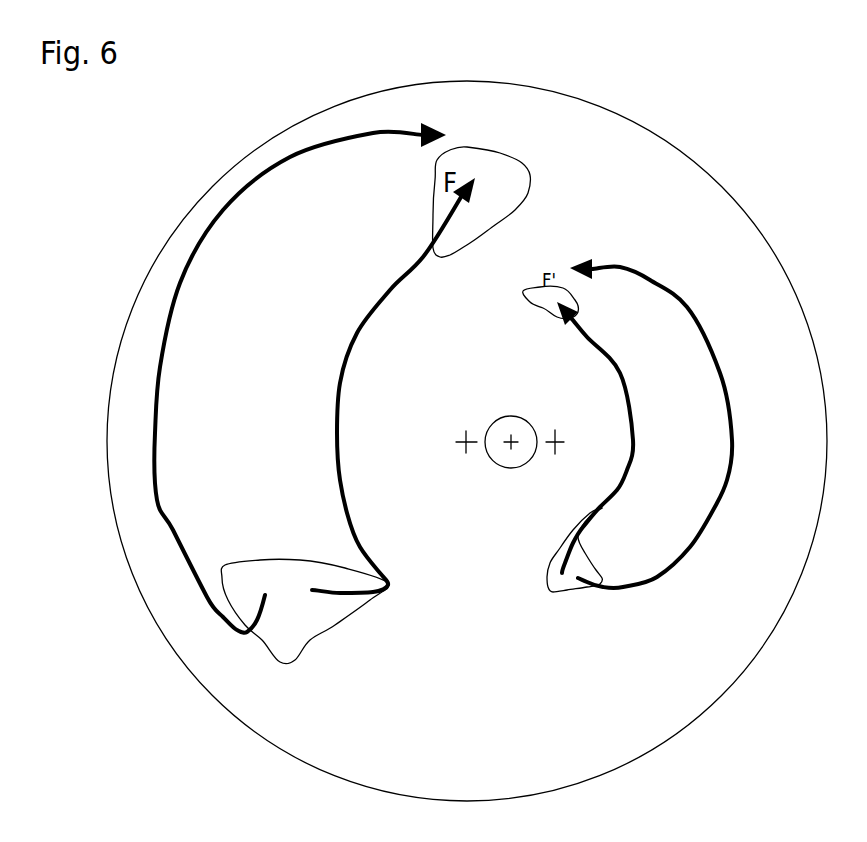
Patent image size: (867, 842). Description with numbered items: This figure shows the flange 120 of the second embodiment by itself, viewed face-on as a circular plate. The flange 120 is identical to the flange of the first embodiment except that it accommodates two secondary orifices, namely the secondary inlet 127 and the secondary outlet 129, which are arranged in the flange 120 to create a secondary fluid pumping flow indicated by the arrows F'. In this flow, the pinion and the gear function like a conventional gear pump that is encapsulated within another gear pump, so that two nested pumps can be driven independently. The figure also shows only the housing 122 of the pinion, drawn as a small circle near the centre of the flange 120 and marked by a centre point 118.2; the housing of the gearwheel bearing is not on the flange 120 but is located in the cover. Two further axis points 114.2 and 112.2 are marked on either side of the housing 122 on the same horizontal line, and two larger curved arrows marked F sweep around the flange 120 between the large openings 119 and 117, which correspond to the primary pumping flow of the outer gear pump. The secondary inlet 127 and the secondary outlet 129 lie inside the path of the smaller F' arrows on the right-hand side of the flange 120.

The flange 120 is at (120, 228).
The first contact region / primary torque transfer zone 119 is at (521, 197).
The second contact region / secondary torque transfer zone 117 is at (309, 619).
The secondary outlet 129 is at (528, 299).
The secondary inlet 127 is at (563, 588).
The housing of the pinion 122 is at (503, 457).
The central axis point 118.2 is at (505, 440).
The first eccentric axis point 114.2 is at (462, 440).
The second eccentric axis point 112.2 is at (553, 447).